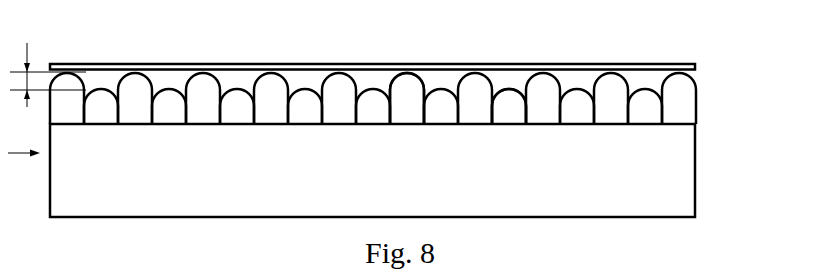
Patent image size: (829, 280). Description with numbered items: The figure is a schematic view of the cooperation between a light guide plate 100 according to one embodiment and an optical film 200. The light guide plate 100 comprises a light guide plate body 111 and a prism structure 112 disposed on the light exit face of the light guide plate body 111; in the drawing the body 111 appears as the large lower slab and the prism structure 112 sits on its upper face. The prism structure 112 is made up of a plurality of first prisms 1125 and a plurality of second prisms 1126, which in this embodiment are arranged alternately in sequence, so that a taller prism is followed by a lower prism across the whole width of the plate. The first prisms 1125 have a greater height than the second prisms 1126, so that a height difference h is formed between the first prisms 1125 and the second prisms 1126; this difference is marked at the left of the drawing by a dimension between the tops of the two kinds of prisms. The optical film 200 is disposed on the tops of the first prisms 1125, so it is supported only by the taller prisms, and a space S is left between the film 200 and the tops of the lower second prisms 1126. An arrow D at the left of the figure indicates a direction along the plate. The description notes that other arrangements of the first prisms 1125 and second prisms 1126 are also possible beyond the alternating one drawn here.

The light guide plate 100 is at (750, 107).
The light guide plate body 111 is at (690, 170).
The prism structure 112 is at (697, 110).
The first prism 1125 is at (422, 80).
The second prism 1126 is at (505, 88).
The optical film 200 is at (696, 67).
The space between cover plate and short protrusion S is at (641, 86).
The height difference h is at (48, 73).
The direction D is at (24, 145).